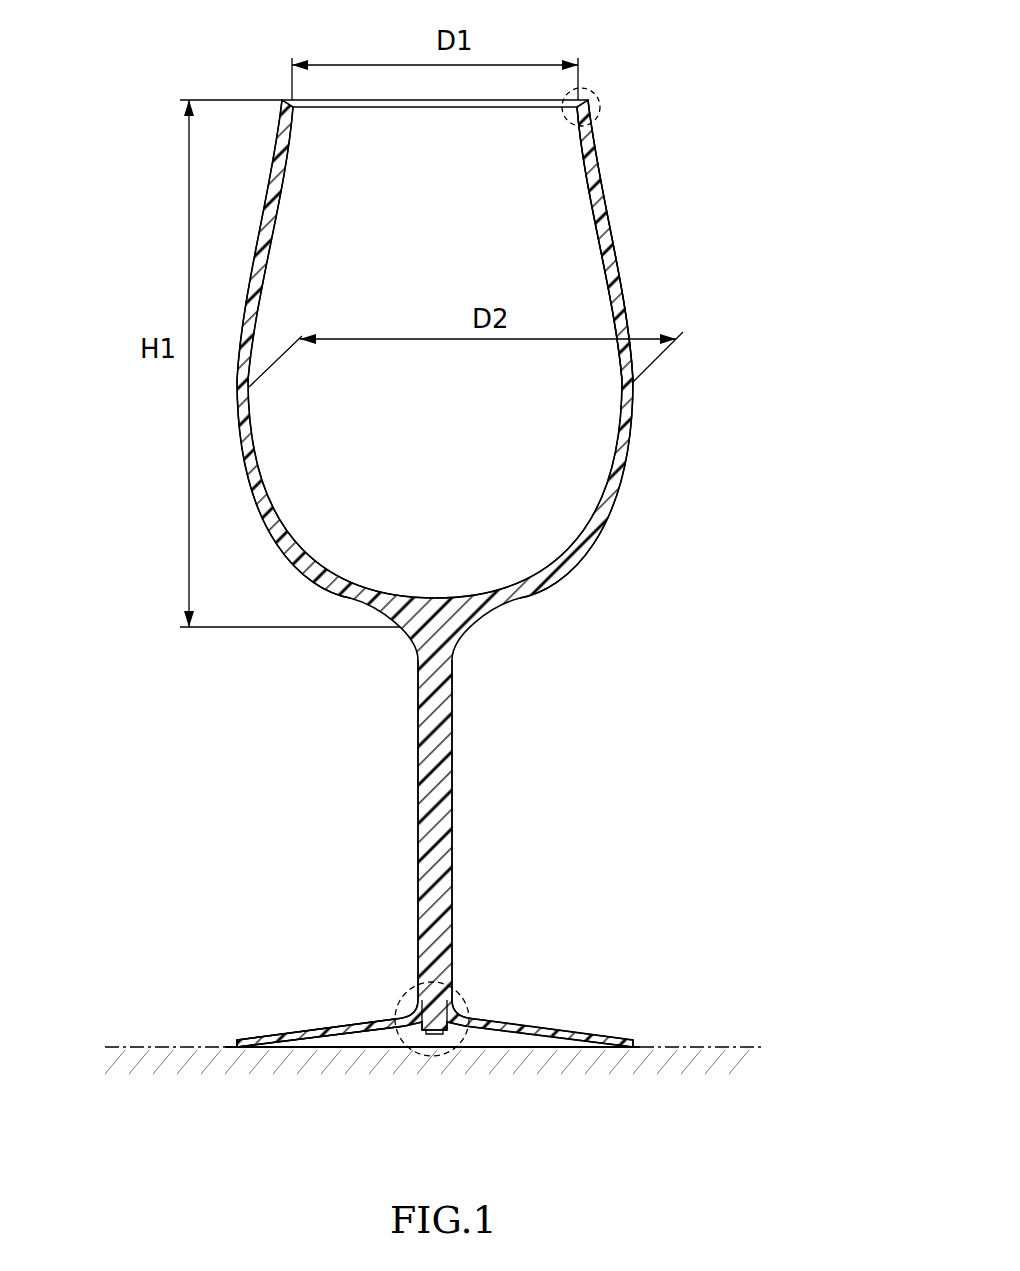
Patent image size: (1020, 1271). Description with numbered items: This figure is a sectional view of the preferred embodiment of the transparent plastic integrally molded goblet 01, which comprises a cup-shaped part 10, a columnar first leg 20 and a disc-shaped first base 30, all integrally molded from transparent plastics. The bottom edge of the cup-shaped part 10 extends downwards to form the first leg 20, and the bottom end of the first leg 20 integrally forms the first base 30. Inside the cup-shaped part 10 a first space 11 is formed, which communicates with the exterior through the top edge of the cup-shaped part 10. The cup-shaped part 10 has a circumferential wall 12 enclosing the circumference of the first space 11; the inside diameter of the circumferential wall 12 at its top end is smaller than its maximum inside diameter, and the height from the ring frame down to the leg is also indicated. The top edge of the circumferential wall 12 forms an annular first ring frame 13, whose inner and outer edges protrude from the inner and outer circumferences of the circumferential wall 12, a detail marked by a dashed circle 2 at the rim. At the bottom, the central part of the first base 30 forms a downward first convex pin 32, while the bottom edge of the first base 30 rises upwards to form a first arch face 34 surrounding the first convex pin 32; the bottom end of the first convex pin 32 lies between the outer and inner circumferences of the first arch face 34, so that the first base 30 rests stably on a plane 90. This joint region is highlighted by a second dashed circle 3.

The transparent plastic integrally molded goblet 01 is at (697, 67).
The rim detail region 2 is at (599, 99).
The stem-foot joint detail region 3 is at (412, 997).
The cup-shaped part 10 is at (612, 228).
The first space 11 is at (560, 445).
The circumferential wall 12 is at (625, 303).
The first ring frame 13 is at (586, 100).
The first leg 20 is at (453, 727).
The first base 30 is at (528, 1020).
The first convex pin 32 is at (449, 1022).
The first arch face 34 is at (347, 1033).
The plane 90 is at (721, 1047).